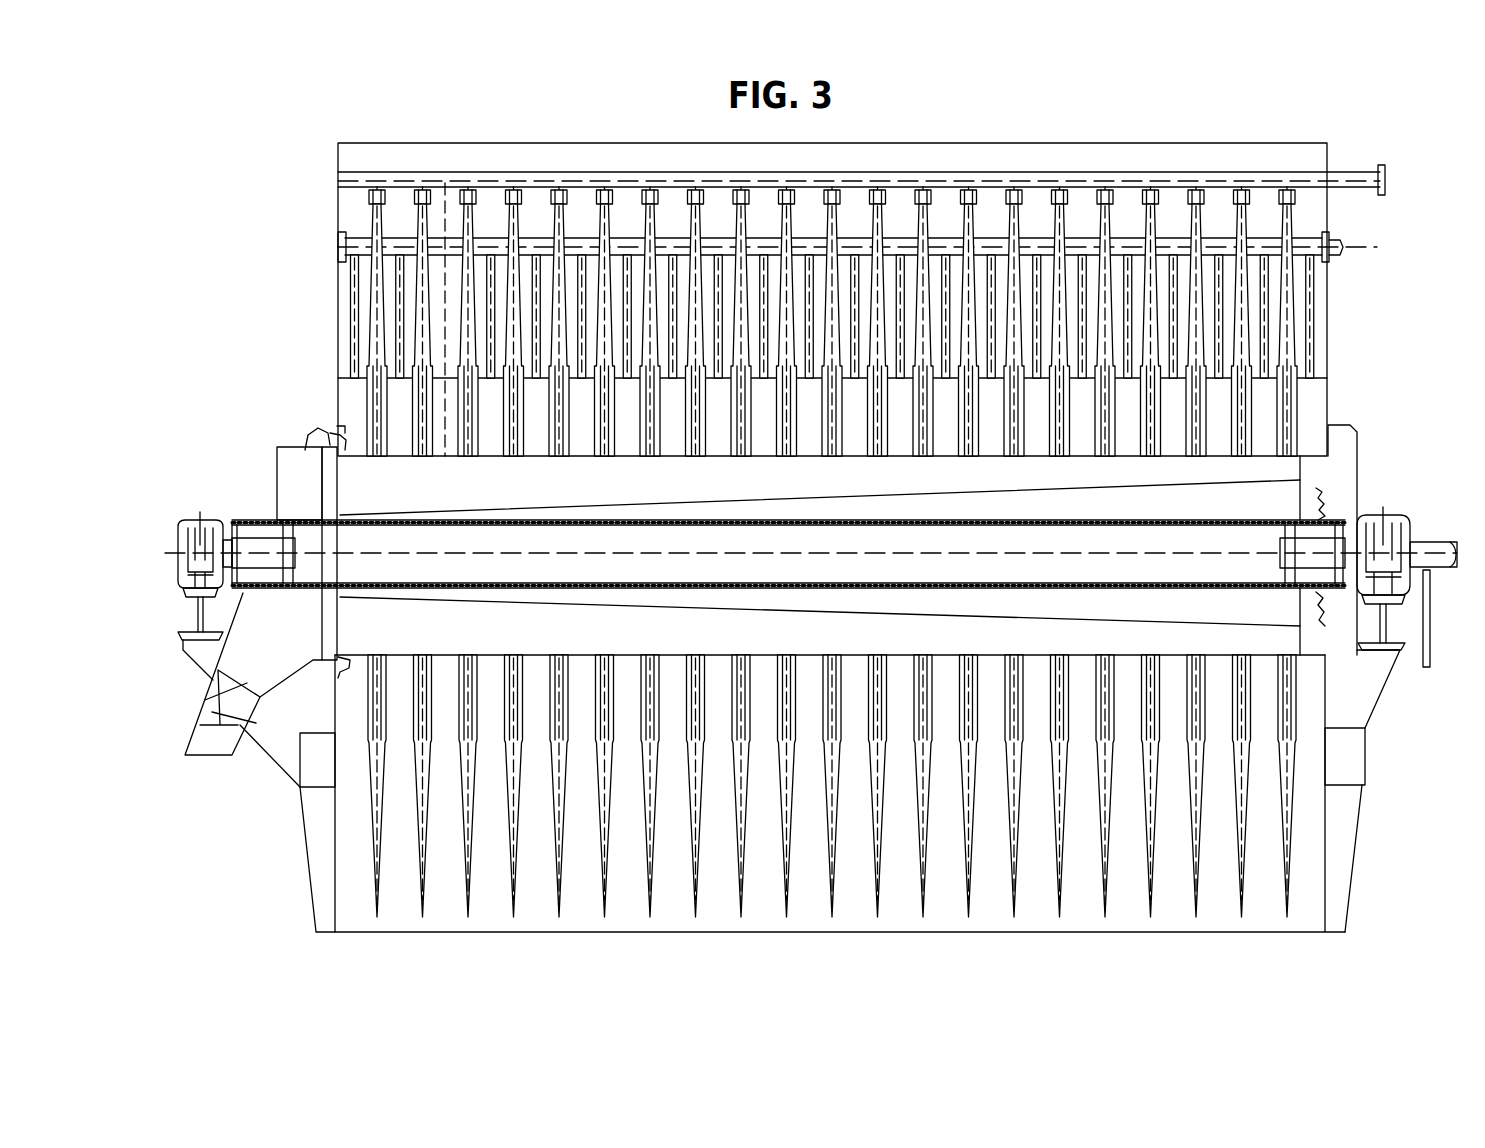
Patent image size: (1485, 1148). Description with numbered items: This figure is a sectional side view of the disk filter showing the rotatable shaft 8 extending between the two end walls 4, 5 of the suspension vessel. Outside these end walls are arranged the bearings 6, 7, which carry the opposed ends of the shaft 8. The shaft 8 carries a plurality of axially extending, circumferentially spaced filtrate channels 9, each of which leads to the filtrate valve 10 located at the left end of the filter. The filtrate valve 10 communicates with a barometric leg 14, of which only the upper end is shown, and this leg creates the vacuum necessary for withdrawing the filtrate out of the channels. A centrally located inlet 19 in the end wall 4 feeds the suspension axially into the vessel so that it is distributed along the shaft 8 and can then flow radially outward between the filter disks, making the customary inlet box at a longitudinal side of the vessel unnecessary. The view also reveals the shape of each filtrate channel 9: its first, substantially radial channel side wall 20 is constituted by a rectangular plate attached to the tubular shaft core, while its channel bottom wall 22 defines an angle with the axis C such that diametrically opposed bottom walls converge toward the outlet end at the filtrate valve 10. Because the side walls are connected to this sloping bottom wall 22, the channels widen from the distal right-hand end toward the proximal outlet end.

The end wall 4 is at (1357, 462).
The end wall 5 is at (318, 810).
The bearing 6 is at (1392, 512).
The bearing 7 is at (208, 518).
The shaft 8 is at (1264, 450).
The filtrate channel 9 is at (366, 480).
The filtrate valve 10 is at (310, 623).
The barometric leg 14 is at (198, 760).
The inlet 19 is at (1432, 630).
The first channel side wall 20 is at (521, 495).
The channel bottom wall 22 is at (692, 506).
The axis C is at (873, 553).